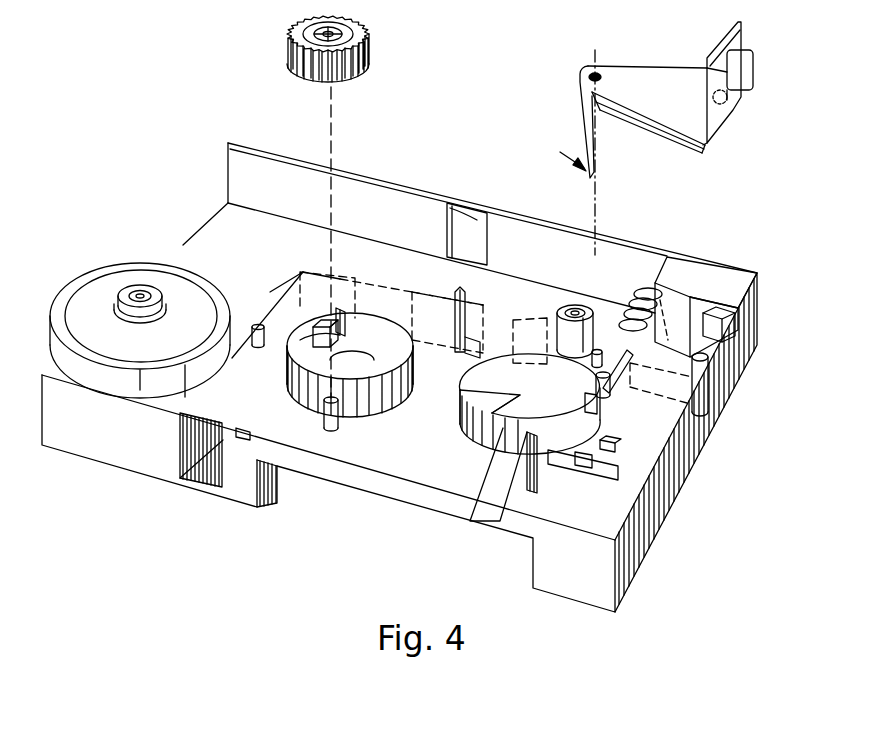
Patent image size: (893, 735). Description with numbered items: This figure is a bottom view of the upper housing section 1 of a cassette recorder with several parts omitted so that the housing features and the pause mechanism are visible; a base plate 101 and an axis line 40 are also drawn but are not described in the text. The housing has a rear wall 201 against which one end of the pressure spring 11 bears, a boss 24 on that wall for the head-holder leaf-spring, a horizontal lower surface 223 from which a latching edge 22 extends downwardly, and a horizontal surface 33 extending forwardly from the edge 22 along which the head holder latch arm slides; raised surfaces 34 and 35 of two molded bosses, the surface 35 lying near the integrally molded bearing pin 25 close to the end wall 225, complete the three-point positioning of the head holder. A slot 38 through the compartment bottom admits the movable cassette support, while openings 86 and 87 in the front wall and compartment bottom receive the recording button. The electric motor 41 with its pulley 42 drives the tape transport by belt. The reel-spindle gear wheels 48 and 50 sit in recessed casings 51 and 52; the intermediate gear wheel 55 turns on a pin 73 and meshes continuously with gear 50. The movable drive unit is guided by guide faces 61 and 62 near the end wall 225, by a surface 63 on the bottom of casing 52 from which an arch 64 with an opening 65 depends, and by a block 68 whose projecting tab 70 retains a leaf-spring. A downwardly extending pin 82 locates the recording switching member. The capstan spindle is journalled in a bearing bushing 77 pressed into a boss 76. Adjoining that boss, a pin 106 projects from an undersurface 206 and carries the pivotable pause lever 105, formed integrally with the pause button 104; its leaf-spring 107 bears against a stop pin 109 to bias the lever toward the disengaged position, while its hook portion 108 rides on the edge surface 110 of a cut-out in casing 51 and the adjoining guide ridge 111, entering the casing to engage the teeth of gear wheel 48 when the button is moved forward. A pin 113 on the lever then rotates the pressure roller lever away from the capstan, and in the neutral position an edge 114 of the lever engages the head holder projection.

The upper housing section 1 is at (732, 362).
The spring 11 is at (634, 295).
The edge 22 is at (400, 297).
The boss 24 is at (472, 228).
The bearing pin 25 is at (732, 397).
The horizontal surface 33 is at (386, 302).
The raised surface 34 is at (617, 472).
The raised surface 35 is at (717, 320).
The slot 38 is at (477, 337).
The axis pin 40 is at (337, 277).
The electric motor 41 is at (100, 295).
The pulley 42 is at (157, 290).
The gear wheel 48 is at (475, 403).
The gear 50 is at (400, 369).
The recessed casing 51 is at (477, 450).
The recessed casing 52 is at (296, 376).
The intermediate gear wheel 55 is at (292, 38).
The guide face 61 is at (697, 273).
The guide face 62 is at (637, 508).
The surface 63 is at (300, 355).
The arch 64 is at (322, 325).
The opening 65 is at (330, 328).
The block 68 is at (510, 472).
The projecting tab 70 is at (552, 418).
The pin 73 is at (340, 427).
The boss 76 is at (560, 318).
The bearing bushing 77 is at (577, 305).
The pin 82 is at (262, 330).
The opening 86 is at (210, 460).
The opening 87 is at (245, 412).
The base plate 101 is at (335, 495).
The pause button 104 is at (748, 62).
The pause lever 105 is at (655, 88).
The pin 106 is at (607, 363).
The leaf-spring 107 is at (632, 125).
The hook portion 108 is at (563, 156).
The stop pin 109 is at (623, 393).
The edge surface 110 is at (573, 410).
The guide ridge 111 is at (593, 437).
The pin 113 is at (713, 107).
The edge 114 is at (728, 123).
The rear wall 201 is at (622, 250).
The undersurface 206 is at (608, 348).
The horizontal lower surface 223 is at (433, 250).
The end wall 225 is at (687, 462).